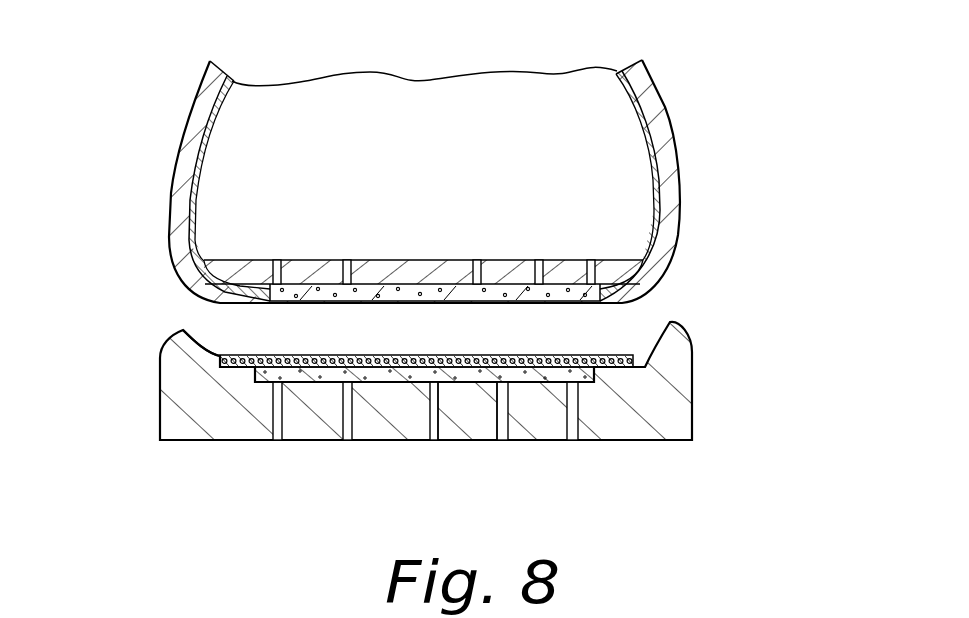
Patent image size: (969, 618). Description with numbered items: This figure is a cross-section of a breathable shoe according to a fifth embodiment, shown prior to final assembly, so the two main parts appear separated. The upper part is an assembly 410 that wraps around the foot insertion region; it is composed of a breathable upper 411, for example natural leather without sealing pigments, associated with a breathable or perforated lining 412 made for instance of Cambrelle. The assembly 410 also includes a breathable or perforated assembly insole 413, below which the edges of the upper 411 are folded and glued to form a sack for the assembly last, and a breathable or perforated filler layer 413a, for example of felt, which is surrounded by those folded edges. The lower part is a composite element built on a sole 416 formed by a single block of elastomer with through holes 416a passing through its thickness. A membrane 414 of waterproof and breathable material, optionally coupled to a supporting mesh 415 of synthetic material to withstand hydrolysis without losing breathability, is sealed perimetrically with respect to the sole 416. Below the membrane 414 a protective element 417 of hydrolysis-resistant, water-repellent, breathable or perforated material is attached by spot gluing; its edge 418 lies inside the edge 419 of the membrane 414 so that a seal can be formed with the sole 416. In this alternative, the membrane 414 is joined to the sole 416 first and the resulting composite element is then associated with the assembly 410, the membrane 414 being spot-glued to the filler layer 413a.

The assembly 410 is at (140, 72).
The upper 411 is at (198, 103).
The lining 412 is at (197, 172).
The assembly insole 413 is at (383, 268).
The filler layer 413a is at (463, 297).
The membrane 414 is at (605, 372).
The supporting mesh 415 is at (613, 350).
The sole 416 is at (675, 420).
The through holes 416a is at (572, 422).
The protective element 417 is at (457, 383).
The edge of the protective element 418 is at (257, 372).
The edge of the membrane 419 is at (220, 357).